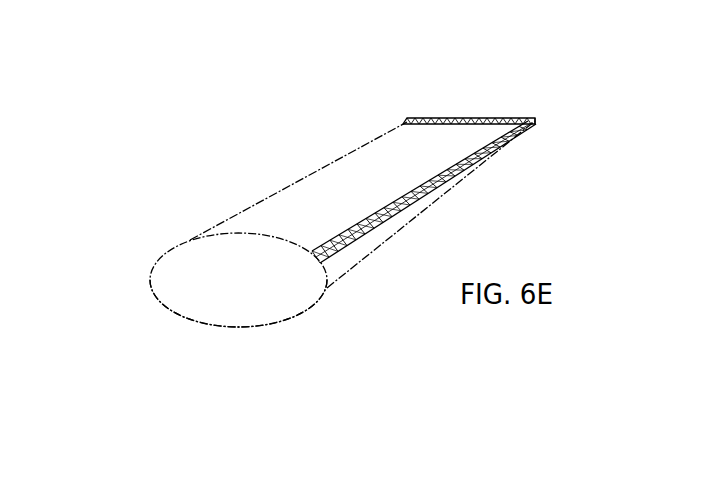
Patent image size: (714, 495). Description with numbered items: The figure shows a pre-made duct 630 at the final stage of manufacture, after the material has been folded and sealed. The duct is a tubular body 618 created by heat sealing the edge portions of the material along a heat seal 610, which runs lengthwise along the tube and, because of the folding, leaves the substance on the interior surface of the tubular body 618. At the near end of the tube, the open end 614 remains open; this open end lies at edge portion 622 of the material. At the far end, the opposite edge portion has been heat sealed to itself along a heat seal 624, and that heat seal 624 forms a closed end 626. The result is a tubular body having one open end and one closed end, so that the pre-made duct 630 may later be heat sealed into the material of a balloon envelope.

The heat seal 610 is at (415, 203).
The open end 614 is at (227, 362).
The tubular body 618 is at (268, 197).
The edge portion 622 is at (149, 285).
The heat seal 624 is at (537, 124).
The closed end 626 is at (471, 96).
The pre-made duct 630 is at (292, 128).